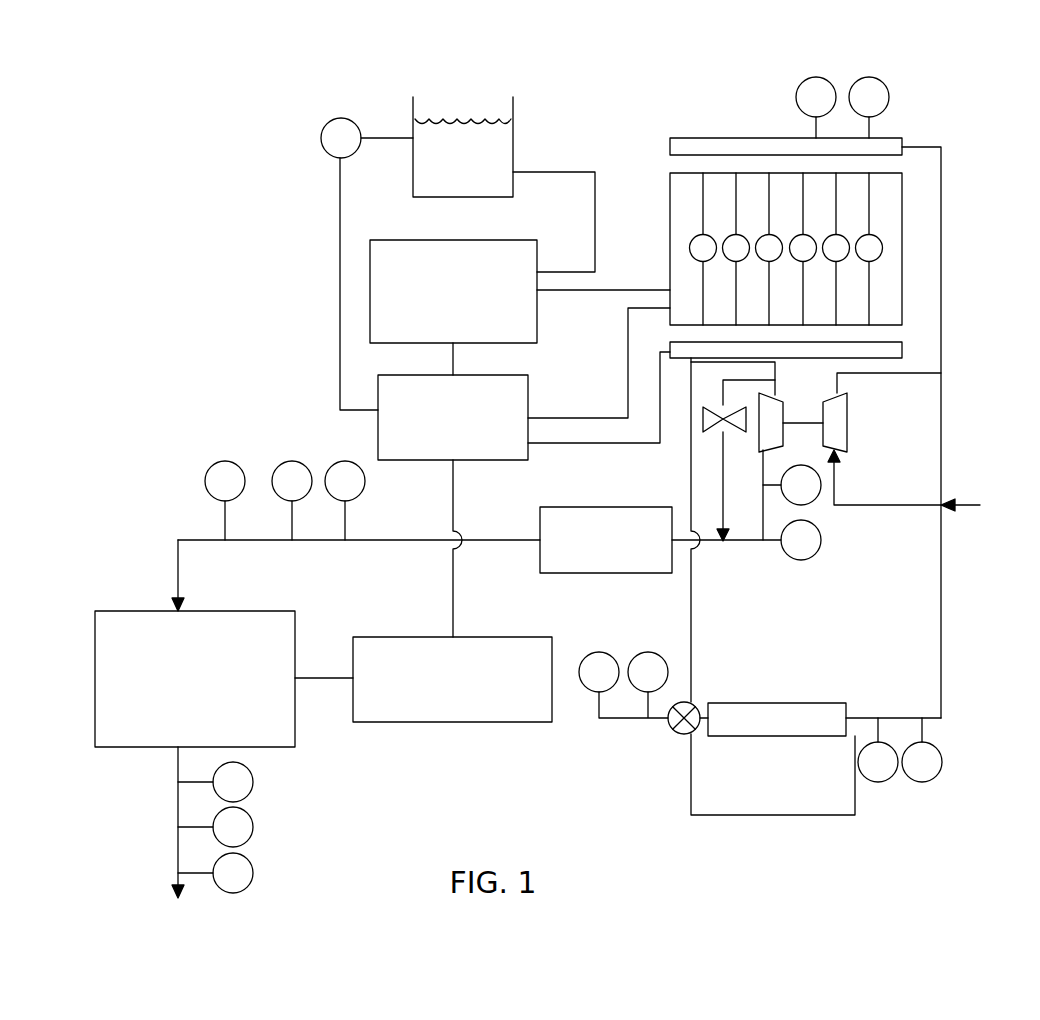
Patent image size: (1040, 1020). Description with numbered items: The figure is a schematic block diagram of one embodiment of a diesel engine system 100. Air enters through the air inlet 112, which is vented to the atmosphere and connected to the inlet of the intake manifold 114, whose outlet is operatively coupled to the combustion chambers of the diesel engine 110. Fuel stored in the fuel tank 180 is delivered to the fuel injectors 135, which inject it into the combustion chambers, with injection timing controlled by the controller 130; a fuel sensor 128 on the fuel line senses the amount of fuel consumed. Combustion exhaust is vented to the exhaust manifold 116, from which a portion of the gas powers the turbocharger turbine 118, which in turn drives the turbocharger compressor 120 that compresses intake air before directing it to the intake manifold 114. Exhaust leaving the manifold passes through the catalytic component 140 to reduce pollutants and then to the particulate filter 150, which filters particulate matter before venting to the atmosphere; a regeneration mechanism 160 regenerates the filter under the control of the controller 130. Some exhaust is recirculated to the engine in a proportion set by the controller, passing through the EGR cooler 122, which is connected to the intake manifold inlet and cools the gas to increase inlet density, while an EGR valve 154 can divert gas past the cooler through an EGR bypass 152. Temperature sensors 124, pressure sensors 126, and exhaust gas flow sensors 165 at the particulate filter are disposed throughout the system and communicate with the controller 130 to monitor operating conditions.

The diesel engine system 100 is at (186, 156).
The diesel engine 110 is at (883, 248).
The air inlet 112 is at (968, 510).
The intake manifold 114 is at (737, 138).
The exhaust manifold 116 is at (810, 360).
The turbocharger turbine 118 is at (760, 445).
The turbocharger compressor 120 is at (849, 417).
The EGR cooler 122 is at (772, 736).
The temperature sensors 124 is at (803, 80).
The pressure sensors 126 is at (889, 97).
The fuel sensor 128 is at (341, 118).
The controller 130 is at (453, 417).
The fuel injectors 135 is at (453, 291).
The catalytic component 140 is at (613, 573).
The particulate filter 150 is at (195, 679).
The EGR bypass 152 is at (782, 815).
The EGR valve 154 is at (676, 732).
The regeneration mechanism 160 is at (452, 679).
The exhaust gas flow sensors 165 is at (223, 460).
The fuel tank 180 is at (412, 150).